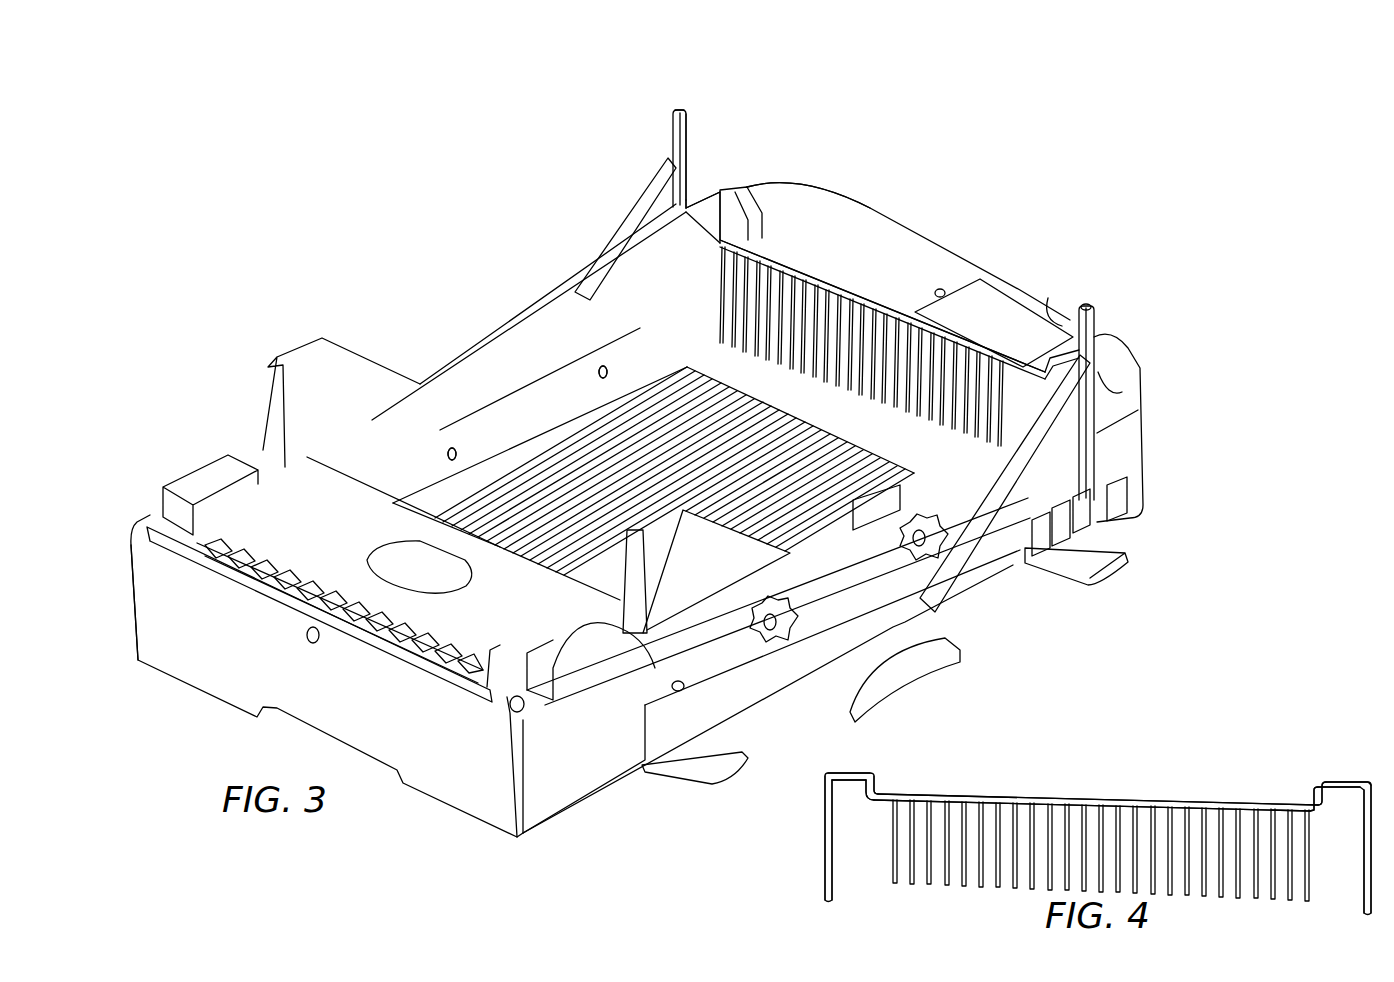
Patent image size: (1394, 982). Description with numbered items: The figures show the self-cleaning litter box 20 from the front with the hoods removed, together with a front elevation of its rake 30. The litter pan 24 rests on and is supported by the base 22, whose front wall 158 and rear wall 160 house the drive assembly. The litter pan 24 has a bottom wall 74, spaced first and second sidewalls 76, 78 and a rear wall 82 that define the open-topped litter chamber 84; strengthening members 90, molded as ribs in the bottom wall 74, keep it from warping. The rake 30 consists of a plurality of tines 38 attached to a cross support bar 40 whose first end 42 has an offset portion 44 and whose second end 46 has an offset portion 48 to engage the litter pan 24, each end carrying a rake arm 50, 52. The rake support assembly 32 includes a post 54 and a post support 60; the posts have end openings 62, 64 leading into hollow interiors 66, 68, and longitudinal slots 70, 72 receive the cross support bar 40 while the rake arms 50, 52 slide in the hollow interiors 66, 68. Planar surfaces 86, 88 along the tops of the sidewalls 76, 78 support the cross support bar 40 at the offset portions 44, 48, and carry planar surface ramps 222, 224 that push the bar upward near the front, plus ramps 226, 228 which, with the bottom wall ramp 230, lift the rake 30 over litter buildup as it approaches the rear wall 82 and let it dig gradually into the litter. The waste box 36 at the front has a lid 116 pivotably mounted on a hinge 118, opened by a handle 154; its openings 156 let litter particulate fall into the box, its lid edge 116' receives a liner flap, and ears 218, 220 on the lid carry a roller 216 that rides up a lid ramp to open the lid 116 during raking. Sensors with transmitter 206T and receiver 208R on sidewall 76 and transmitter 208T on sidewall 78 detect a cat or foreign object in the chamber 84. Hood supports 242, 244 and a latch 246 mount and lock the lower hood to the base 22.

In FIG. 3, the self-cleaning litter box 20 is at (525, 294).
In FIG. 3, the base 22 is at (1113, 450).
In FIG. 3, the litter pan 24 is at (497, 340).
In FIG. 4, the rake 30 is at (1100, 782).
In FIG. 3, the rake support assembly 32 is at (578, 230).
In FIG. 3, the waste box 36 is at (488, 653).
In FIG. 3, the tines 38 is at (873, 345).
In FIG. 4, the tines 38 is at (1153, 827).
In FIG. 3, the cross support bar 40 is at (793, 273).
In FIG. 4, the cross support bar 40 is at (1230, 800).
In FIG. 3, the first end 42 is at (700, 203).
In FIG. 4, the first end 42 is at (830, 775).
In FIG. 3, the offset portion 44 is at (738, 200).
In FIG. 4, the offset portion 44 is at (870, 767).
In FIG. 4, the second end 46 is at (1372, 783).
In FIG. 3, the offset portion 48 is at (1050, 380).
In FIG. 4, the offset portion 48 is at (1343, 777).
In FIG. 4, the rake arm 50 is at (827, 837).
In FIG. 4, the rake arm 52 is at (1370, 852).
In FIG. 3, the post 54 is at (673, 146).
In FIG. 3, the post support 60 is at (1110, 535).
In FIG. 3, the end opening 62 is at (673, 112).
In FIG. 3, the end opening 64 is at (1090, 308).
In FIG. 3, the hollow interior 66 is at (688, 168).
In FIG. 3, the hollow interior 68 is at (1062, 322).
In FIG. 3, the slot 70 is at (687, 128).
In FIG. 3, the slot 72 is at (1083, 305).
In FIG. 3, the bottom wall 74 is at (533, 500).
In FIG. 3, the first sidewall 76 is at (517, 430).
In FIG. 3, the second sidewall 78 is at (853, 500).
In FIG. 3, the rear wall 82 is at (837, 283).
In FIG. 3, the litter chamber 84 is at (680, 475).
In FIG. 3, the planar surface 86 is at (543, 313).
In FIG. 3, the planar surface 88 is at (856, 497).
In FIG. 3, the strengthening members 90 is at (580, 557).
In FIG. 3, the lid 116 is at (383, 579).
In FIG. 3, the lid edge 116' is at (340, 596).
In FIG. 3, the hinge 118 is at (520, 708).
In FIG. 3, the handle 154 is at (430, 578).
In FIG. 3, the openings 156 is at (407, 632).
In FIG. 3, the front wall 158 is at (463, 788).
In FIG. 3, the rear wall 160 is at (973, 260).
In FIG. 3, the transmitter 206T is at (598, 375).
In FIG. 3, the receiver 208R is at (447, 457).
In FIG. 3, the transmitter 208T is at (777, 620).
In FIG. 3, the roller 216 is at (682, 681).
In FIG. 3, the ear 218 is at (216, 466).
In FIG. 3, the ear 220 is at (590, 717).
In FIG. 3, the planar surface ramp 222 is at (363, 356).
In FIG. 3, the planar surface ramp 224 is at (733, 527).
In FIG. 3, the ramp 226 is at (668, 238).
In FIG. 3, the ramp 228 is at (1017, 420).
In FIG. 3, the ramp 230 is at (783, 390).
In FIG. 3, the hood support 242 is at (1080, 565).
In FIG. 3, the hood support 244 is at (700, 760).
In FIG. 3, the latch 246 is at (920, 663).